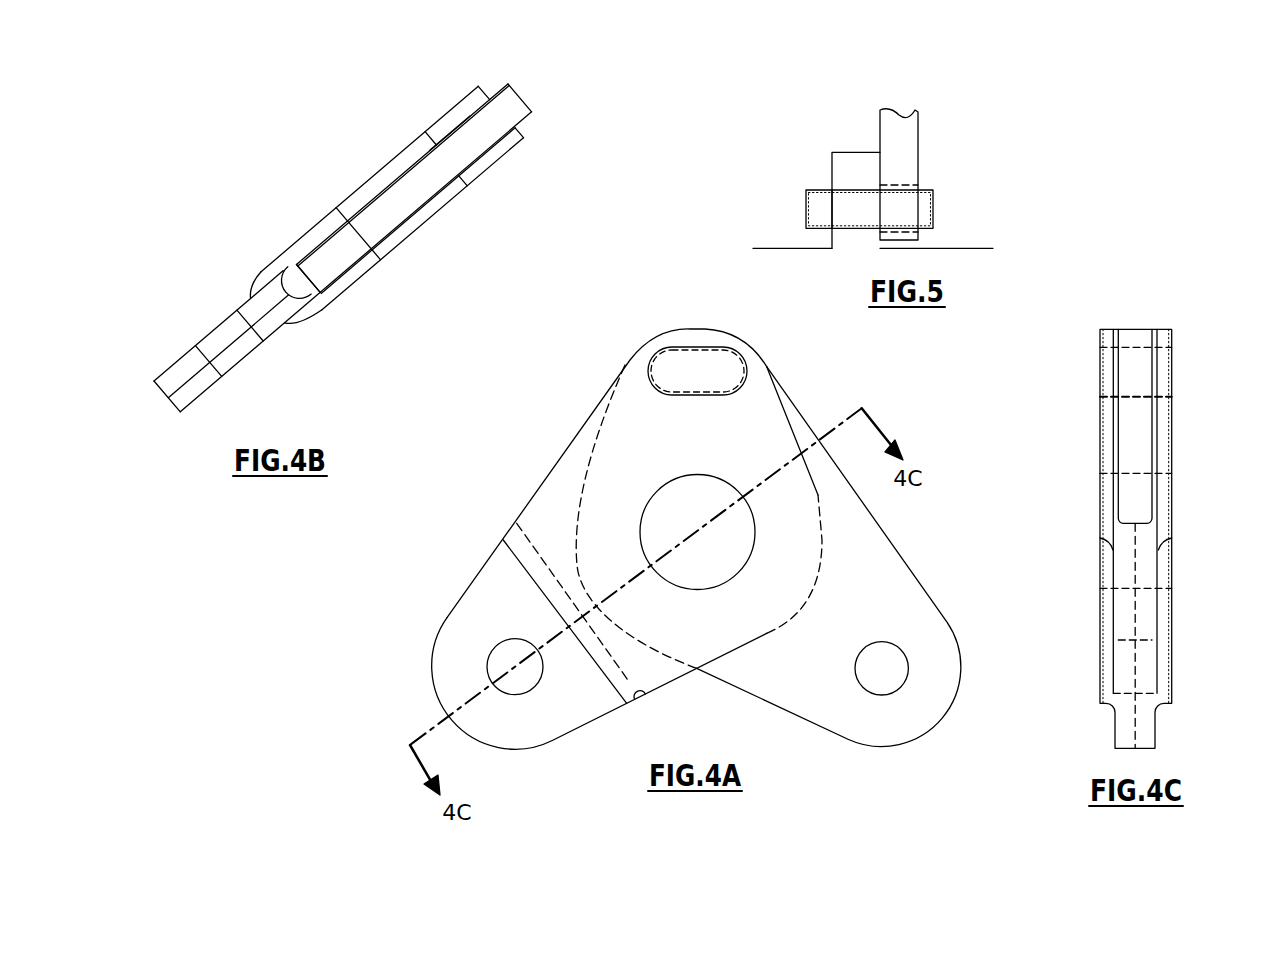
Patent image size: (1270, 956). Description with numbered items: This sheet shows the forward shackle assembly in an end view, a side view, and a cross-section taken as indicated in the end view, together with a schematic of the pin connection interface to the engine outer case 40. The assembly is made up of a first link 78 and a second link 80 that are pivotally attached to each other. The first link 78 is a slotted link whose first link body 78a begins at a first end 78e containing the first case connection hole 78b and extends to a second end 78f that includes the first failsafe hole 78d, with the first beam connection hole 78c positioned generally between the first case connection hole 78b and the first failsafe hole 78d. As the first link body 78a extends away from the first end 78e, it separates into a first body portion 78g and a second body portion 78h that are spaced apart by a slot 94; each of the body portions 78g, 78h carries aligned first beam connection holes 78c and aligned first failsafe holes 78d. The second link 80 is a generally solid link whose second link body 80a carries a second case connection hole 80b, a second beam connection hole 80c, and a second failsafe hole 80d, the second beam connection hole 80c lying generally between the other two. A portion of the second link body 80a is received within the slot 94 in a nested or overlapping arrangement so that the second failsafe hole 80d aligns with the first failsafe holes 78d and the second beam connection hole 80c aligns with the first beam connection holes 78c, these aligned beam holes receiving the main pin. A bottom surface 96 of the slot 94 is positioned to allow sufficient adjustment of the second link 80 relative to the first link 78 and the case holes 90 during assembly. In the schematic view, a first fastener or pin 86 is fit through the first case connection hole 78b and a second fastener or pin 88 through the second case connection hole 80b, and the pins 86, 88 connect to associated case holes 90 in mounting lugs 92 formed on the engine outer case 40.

In FIG. 5, the engine outer case 40 is at (968, 247).
In FIG. 4B, the first link 78 is at (248, 300).
In FIG. 4A, the first link 78 is at (542, 482).
In FIG. 4C, the first link 78 is at (1113, 732).
In FIG. 5, the first link 78 is at (949, 168).
In FIG. 4A, the first link body 78a is at (527, 607).
In FIG. 4B, the first case connection hole 78b is at (208, 352).
In FIG. 5, the first case connection hole 78b is at (962, 187).
In FIG. 4B, the first beam connection hole 78c is at (432, 137).
In FIG. 4A, the first beam connection hole 78c is at (698, 476).
In FIG. 4A, the first failsafe hole 78d is at (700, 331).
In FIG. 4B, the first end 78e is at (170, 405).
In FIG. 4B, the second end 78f is at (524, 136).
In FIG. 4B, the first body portion 78g is at (391, 166).
In FIG. 4C, the first body portion 78g is at (1103, 612).
In FIG. 4B, the second body portion 78h is at (407, 234).
In FIG. 4C, the second body portion 78h is at (1167, 578).
In FIG. 4B, the second link 80 is at (533, 116).
In FIG. 4A, the second link 80 is at (893, 545).
In FIG. 4C, the second link 80 is at (1127, 329).
In FIG. 5, the second link 80 is at (908, 127).
In FIG. 4A, the second link body 80a is at (841, 595).
In FIG. 4A, the second case connection hole 80b is at (862, 687).
In FIG. 5, the second case connection hole 80b is at (897, 183).
In FIG. 4B, the second beam connection hole 80c is at (452, 160).
In FIG. 4A, the second failsafe hole 80d is at (649, 380).
In FIG. 5, the first fastener or pin 86 is at (928, 202).
In FIG. 5, the second fastener or pin 88 is at (935, 208).
In FIG. 5, the case hole 90 is at (845, 183).
In FIG. 5, the mounting lug 92 is at (862, 160).
In FIG. 4B, the slot 94 is at (312, 290).
In FIG. 4B, the bottom surface 96 is at (285, 262).
In FIG. 4A, the bottom surface 96 is at (650, 690).